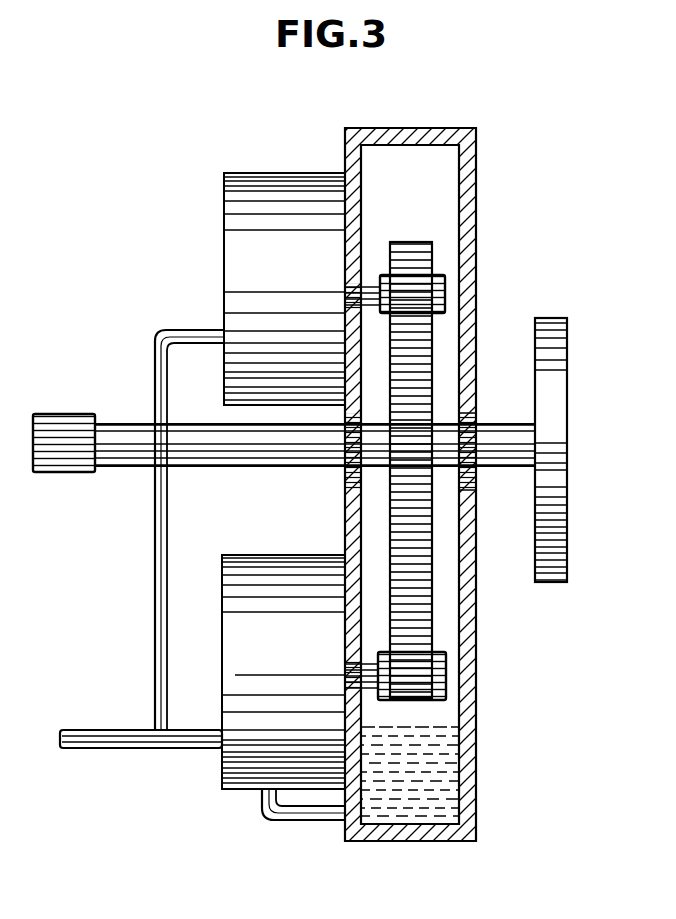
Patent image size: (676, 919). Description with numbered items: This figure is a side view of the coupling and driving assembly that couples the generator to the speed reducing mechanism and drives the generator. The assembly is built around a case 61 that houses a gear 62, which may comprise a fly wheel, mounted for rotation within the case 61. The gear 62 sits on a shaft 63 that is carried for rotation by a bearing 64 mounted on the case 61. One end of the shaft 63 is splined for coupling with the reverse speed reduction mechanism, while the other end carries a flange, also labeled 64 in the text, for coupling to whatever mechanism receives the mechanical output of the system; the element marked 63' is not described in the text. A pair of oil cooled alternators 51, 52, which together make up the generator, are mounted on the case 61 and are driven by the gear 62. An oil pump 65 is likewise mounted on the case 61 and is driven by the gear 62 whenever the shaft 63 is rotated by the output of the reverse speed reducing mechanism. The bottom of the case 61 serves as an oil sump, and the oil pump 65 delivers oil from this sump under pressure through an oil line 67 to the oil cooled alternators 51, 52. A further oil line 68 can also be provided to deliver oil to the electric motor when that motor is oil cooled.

The oil cooled alternator 51 is at (240, 252).
The oil cooled alternator 52 is at (283, 481).
The case 61 is at (478, 232).
The gear 62 is at (418, 217).
The shaft 63 is at (284, 459).
The gear on shaft 63' is at (564, 431).
The bearing 64 is at (477, 478).
The oil pump 65 is at (242, 788).
The oil line 67 is at (155, 622).
The oil line 68 is at (122, 748).